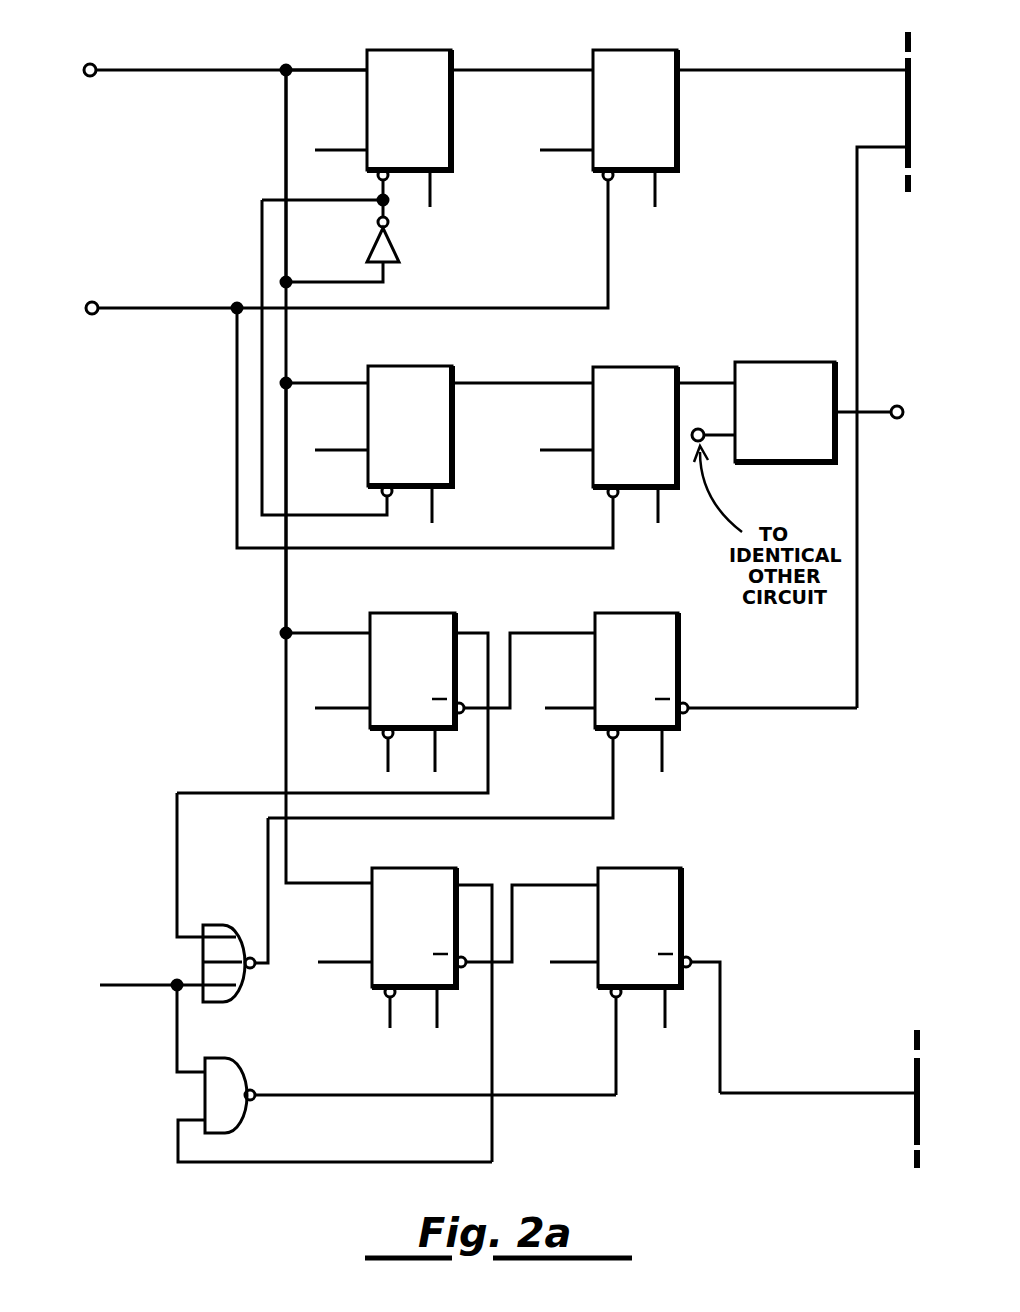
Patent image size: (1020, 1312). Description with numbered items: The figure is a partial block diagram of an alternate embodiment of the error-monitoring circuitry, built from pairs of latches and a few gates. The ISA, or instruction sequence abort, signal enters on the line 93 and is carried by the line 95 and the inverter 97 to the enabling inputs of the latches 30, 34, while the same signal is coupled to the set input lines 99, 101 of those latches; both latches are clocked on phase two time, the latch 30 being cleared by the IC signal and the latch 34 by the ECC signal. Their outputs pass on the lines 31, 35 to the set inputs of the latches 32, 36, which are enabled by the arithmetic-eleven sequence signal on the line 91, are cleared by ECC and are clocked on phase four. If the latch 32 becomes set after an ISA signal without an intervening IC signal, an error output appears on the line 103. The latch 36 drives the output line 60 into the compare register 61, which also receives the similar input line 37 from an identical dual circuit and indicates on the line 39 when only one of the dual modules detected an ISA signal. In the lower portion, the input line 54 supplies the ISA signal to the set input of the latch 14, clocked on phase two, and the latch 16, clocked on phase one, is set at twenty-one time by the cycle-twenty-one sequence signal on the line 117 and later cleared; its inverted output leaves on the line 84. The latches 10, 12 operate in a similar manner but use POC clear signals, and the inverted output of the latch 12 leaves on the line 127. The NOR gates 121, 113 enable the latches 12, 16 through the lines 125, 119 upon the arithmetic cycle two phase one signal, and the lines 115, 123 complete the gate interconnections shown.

The latch 10 is at (398, 868).
The latch 12 is at (628, 868).
The latch 14 is at (398, 613).
The latch 16 is at (620, 613).
The latch 30 is at (390, 50).
The line 31 is at (497, 70).
The latch 32 is at (615, 50).
The latch 34 is at (395, 366).
The line 35 is at (505, 383).
The latch 36 is at (625, 367).
The input line 37 is at (725, 440).
The line 39 is at (872, 410).
The input line 54 is at (283, 596).
The output line 60 is at (708, 383).
The compare register 61 is at (775, 362).
The line 84 is at (878, 145).
The line 91 is at (168, 310).
The line 93 is at (168, 72).
The line 95 is at (283, 148).
The inverter 97 is at (396, 238).
The set input line 99 is at (318, 68).
The set input line 101 is at (340, 383).
The line 103 is at (873, 68).
The NOR gate 113 is at (243, 945).
The line 115 is at (177, 857).
The line 117 is at (157, 988).
The line 119 is at (268, 857).
The NOR gate 121 is at (243, 1070).
The line 123 is at (325, 1162).
The line 125 is at (330, 1095).
The line 127 is at (888, 1092).